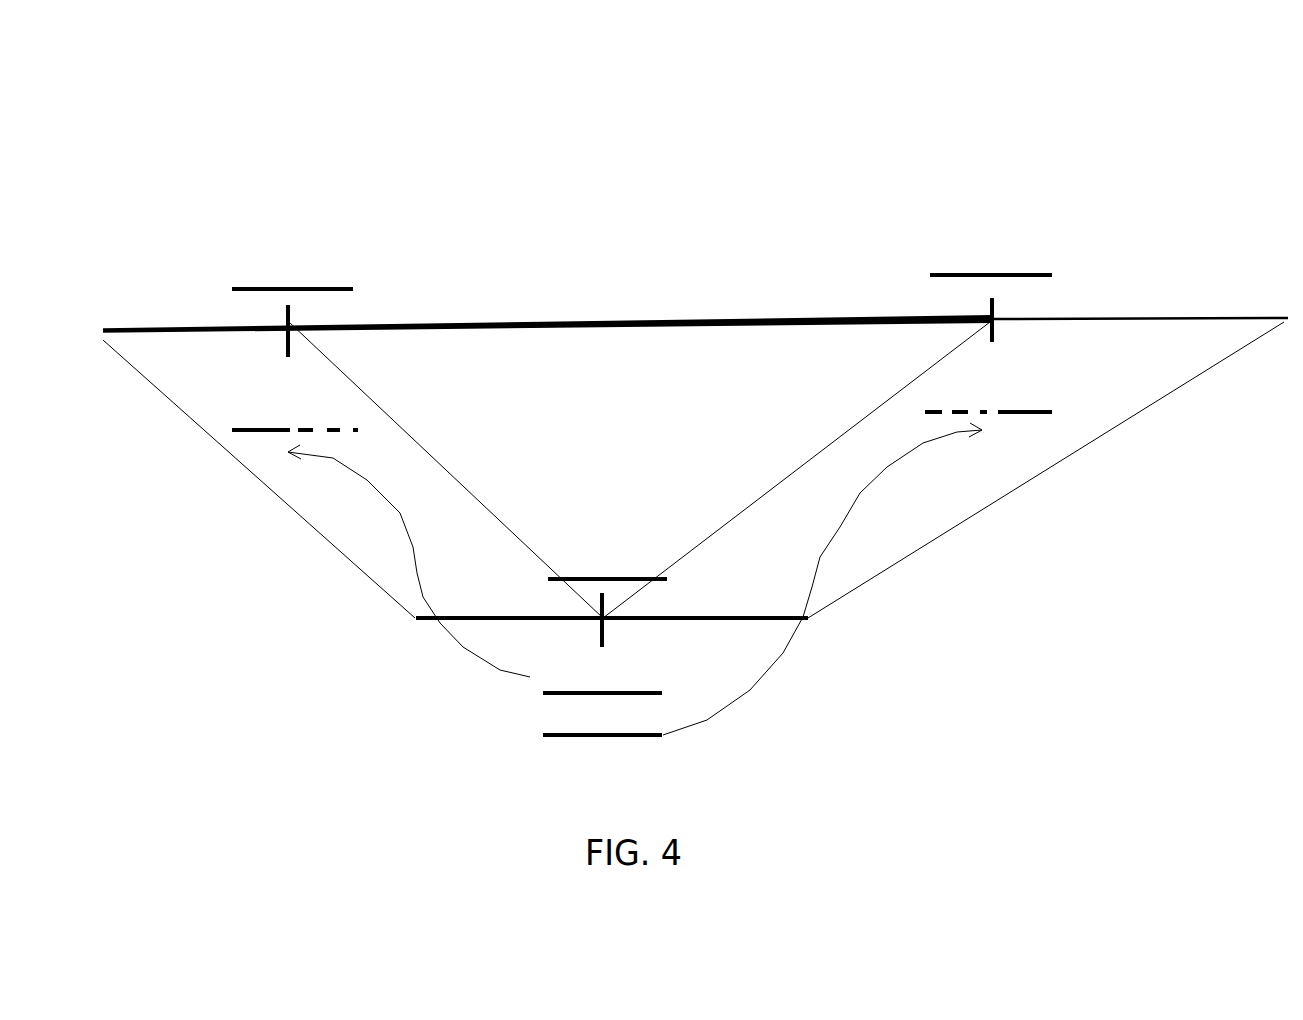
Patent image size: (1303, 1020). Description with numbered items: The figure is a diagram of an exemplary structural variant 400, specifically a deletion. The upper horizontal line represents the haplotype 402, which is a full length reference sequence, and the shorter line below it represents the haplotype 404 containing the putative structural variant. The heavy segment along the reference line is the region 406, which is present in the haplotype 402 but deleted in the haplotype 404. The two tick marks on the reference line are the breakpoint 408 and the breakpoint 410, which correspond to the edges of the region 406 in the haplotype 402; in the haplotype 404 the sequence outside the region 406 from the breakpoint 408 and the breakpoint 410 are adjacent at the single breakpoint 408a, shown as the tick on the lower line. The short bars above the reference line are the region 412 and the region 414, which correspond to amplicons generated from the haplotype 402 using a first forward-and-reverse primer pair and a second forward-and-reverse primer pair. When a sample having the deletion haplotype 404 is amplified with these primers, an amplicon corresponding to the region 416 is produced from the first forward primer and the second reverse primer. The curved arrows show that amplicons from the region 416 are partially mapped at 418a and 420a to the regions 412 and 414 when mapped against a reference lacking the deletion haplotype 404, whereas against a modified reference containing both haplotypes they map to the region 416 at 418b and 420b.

The structural variant 400 is at (1062, 161).
The haplotype 402 is at (1132, 317).
The haplotype 404 is at (612, 594).
The region 406 is at (698, 318).
The breakpoint 408 is at (287, 337).
The breakpoint 408a is at (553, 631).
The breakpoint 410 is at (950, 328).
The region 412 is at (312, 254).
The region 414 is at (1017, 240).
The region 416 is at (624, 543).
The partial mapping location 418a is at (280, 411).
The mapping location 418b is at (623, 669).
The partial mapping location 420a is at (1023, 387).
The mapping location 420b is at (562, 765).